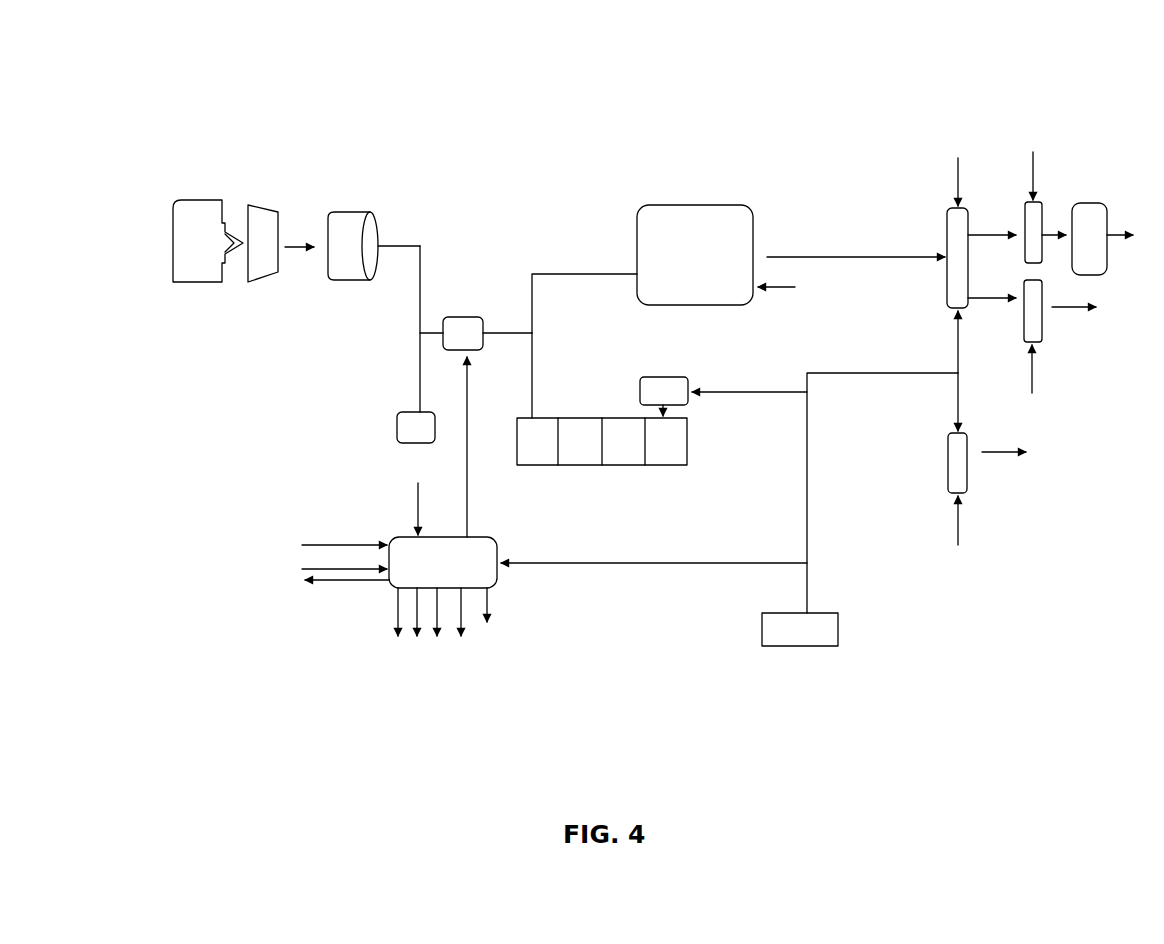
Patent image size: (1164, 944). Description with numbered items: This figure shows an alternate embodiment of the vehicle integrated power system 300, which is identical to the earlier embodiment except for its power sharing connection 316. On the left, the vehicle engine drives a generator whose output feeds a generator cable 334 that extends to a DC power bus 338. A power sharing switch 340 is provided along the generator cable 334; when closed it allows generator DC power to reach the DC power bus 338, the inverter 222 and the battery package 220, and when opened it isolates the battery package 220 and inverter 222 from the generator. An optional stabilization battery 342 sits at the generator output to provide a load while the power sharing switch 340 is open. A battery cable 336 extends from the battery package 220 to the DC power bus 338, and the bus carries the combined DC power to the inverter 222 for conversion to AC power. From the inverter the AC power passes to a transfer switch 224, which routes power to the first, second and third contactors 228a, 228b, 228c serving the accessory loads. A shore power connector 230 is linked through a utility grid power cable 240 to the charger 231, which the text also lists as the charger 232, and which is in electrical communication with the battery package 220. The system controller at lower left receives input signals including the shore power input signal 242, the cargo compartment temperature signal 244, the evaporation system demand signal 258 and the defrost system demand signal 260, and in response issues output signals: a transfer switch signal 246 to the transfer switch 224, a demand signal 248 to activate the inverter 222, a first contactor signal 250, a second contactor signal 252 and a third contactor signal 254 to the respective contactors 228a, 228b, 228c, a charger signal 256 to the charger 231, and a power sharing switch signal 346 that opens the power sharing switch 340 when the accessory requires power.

The integrated power system 300 is at (897, 70).
The power sharing connection 316 is at (422, 268).
The generator cable 334 is at (418, 307).
The DC power bus 338 is at (535, 313).
The battery cable 336 is at (535, 380).
The power sharing switch 340 is at (462, 343).
The stabilization battery 342 is at (397, 415).
The power sharing switch signal 346 is at (466, 432).
The cargo compartment temperature signal 244 is at (417, 502).
The battery package 220 is at (638, 453).
The inverter 222 is at (688, 212).
The transfer switch 224 is at (948, 235).
The first contactor 228a is at (1043, 210).
The second contactor 228b is at (1042, 330).
The third contactor 228c is at (968, 473).
The shore power connector 230 is at (798, 632).
The charger 231 is at (665, 380).
The charger 232 is at (835, 257).
The utility grid power cable 240 is at (807, 478).
The shore power input signal 242 is at (587, 563).
The transfer switch signal 246 is at (957, 178).
The demand signal 248 is at (777, 287).
The first contactor signal 250 is at (1035, 155).
The second contactor signal 252 is at (423, 615).
The third contactor signal 254 is at (960, 535).
The charger signal 256 is at (752, 392).
The evaporation system demand signal 258 is at (312, 569).
The defrost system demand signal 260 is at (330, 542).